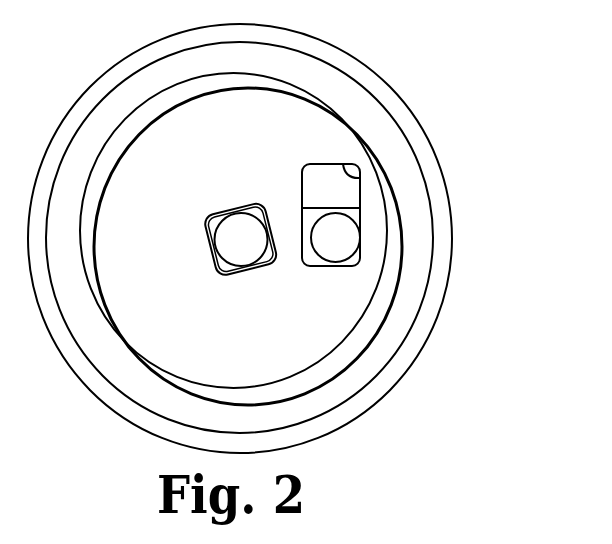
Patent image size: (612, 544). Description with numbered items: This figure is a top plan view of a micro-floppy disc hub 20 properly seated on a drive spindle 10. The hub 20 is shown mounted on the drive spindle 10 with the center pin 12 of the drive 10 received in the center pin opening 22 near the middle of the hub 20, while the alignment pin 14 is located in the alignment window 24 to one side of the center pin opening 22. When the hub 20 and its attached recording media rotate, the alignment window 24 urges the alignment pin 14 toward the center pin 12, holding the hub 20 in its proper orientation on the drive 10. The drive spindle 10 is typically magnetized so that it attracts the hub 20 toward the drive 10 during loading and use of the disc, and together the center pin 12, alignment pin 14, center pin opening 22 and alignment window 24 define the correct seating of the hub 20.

The drive spindle 10 is at (350, 46).
The center pin 12 is at (242, 247).
The alignment pin 14 is at (342, 233).
The hub 20 is at (365, 130).
The center pin opening 22 is at (256, 202).
The alignment window 24 is at (347, 168).